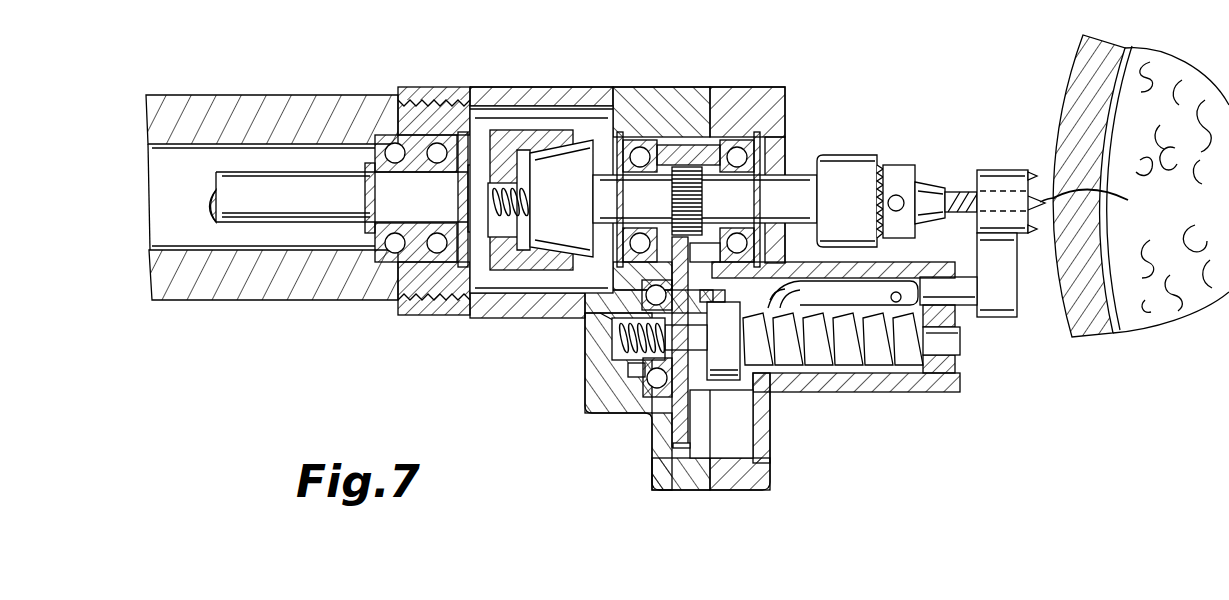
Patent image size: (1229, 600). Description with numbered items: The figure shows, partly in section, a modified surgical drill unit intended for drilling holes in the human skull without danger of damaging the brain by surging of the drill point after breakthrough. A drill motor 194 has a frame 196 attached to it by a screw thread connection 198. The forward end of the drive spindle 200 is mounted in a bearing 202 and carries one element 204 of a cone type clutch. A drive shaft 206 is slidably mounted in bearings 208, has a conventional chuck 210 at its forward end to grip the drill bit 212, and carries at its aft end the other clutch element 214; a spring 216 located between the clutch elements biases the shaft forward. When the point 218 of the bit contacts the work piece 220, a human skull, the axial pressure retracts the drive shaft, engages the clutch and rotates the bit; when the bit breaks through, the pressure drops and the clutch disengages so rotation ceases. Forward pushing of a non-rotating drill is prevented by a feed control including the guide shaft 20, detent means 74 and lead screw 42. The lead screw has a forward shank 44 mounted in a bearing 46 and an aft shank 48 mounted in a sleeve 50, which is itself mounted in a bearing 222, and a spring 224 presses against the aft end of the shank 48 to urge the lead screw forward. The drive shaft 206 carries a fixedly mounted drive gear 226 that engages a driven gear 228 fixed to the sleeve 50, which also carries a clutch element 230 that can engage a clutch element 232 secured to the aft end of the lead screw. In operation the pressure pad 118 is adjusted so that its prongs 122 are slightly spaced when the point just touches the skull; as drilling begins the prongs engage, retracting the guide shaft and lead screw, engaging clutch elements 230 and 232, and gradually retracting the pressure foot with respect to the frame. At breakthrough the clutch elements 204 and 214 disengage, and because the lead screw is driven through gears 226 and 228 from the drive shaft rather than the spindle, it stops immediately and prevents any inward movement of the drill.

The drill motor 194 is at (248, 302).
The frame 196 is at (574, 372).
The screw thread connection 198 is at (440, 100).
The drive spindle 200 is at (215, 190).
The bearing 202 is at (400, 266).
The clutch element 204 is at (490, 313).
The drive shaft 206 is at (790, 177).
The bearings 208 is at (733, 140).
The chuck 210 is at (857, 157).
The drill bit 212 is at (952, 190).
The clutch element 214 is at (556, 254).
The spring 216 is at (524, 192).
The point 218 is at (1125, 202).
The work piece 220 is at (1066, 70).
The bearing 222 is at (657, 420).
The spring 224 is at (640, 372).
The drive gear 226 is at (705, 190).
The driven gear 228 is at (683, 450).
The clutch element 230 is at (734, 373).
The clutch element 232 is at (736, 370).
The lead screw 42 is at (843, 352).
The forward shank 44 is at (905, 376).
The bearing 46 is at (940, 376).
The aft shank 48 is at (670, 395).
The sleeve 50 is at (622, 352).
The detent means 74 is at (880, 289).
The guide shaft 20 is at (962, 306).
The pressure pad 118 is at (990, 170).
The prongs 122 is at (1022, 240).